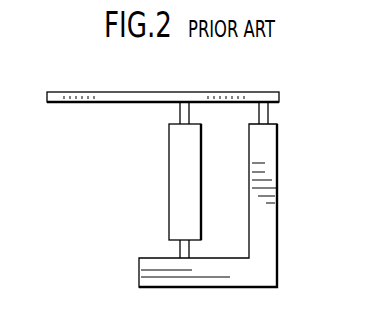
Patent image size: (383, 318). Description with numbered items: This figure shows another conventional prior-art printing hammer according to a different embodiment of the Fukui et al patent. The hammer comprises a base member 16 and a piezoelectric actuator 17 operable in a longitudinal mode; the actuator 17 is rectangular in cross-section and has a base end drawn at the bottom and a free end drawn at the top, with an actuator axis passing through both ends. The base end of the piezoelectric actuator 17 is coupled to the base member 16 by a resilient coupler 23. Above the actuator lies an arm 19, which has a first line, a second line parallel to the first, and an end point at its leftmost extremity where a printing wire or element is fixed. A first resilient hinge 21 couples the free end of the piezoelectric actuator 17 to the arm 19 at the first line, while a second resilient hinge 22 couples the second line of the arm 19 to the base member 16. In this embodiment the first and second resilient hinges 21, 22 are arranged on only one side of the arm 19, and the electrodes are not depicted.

The arm 19 is at (104, 92).
The first resilient hinge 21 is at (179, 114).
The second resilient hinge 22 is at (269, 111).
The piezoelectric actuator 17 is at (169, 202).
The resilient coupler 23 is at (191, 251).
The base member 16 is at (279, 219).